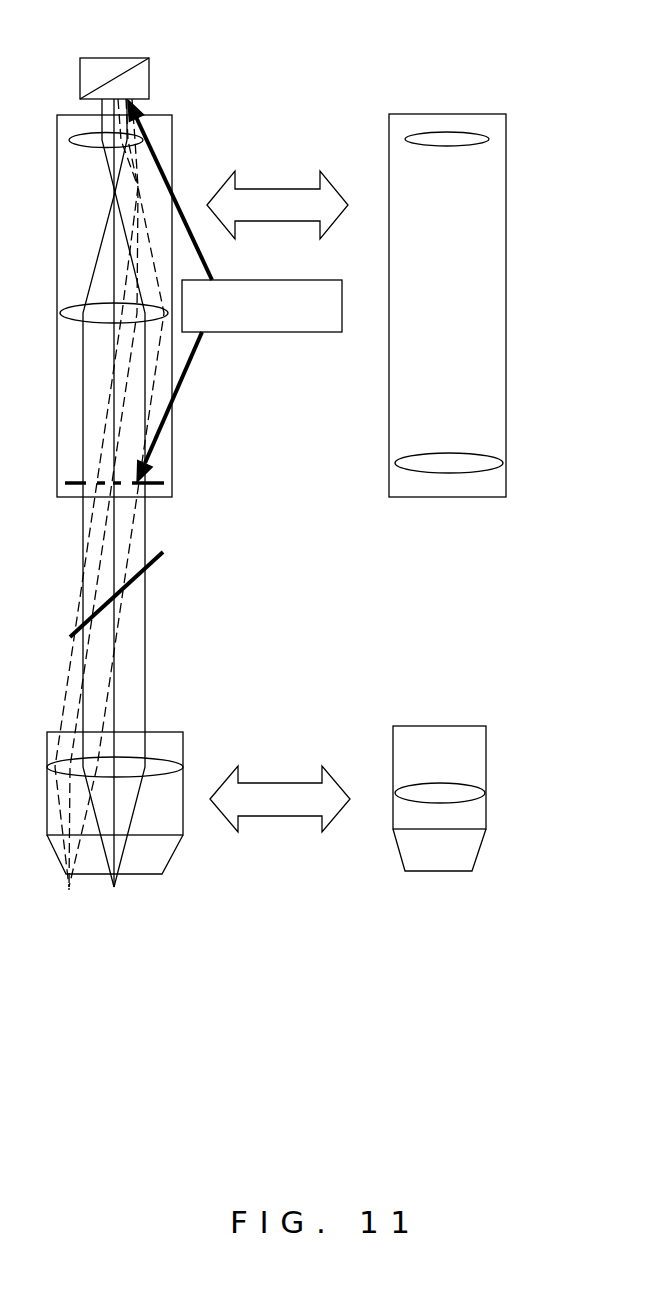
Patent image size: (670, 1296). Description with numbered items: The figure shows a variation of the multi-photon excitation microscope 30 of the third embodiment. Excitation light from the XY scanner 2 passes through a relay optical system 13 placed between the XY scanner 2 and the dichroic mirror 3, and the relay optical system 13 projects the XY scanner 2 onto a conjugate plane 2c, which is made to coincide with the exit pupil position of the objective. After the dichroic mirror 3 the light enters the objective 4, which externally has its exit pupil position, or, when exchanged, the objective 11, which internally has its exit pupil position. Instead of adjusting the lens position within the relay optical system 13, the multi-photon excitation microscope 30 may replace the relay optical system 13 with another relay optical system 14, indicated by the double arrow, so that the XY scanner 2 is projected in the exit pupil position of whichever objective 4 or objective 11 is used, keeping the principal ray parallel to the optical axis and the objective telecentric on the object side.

The multi-photon excitation microscope 30 is at (607, 39).
The XY scanner 2 is at (150, 73).
The relay optical system 13 is at (57, 296).
The conjugate plane 2c is at (165, 483).
The relay optical system 14 is at (389, 292).
The dichroic mirror 3 is at (158, 562).
The objective 4 is at (183, 749).
The objective 11 is at (486, 757).